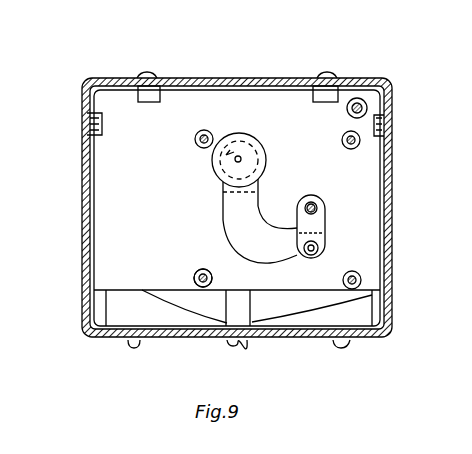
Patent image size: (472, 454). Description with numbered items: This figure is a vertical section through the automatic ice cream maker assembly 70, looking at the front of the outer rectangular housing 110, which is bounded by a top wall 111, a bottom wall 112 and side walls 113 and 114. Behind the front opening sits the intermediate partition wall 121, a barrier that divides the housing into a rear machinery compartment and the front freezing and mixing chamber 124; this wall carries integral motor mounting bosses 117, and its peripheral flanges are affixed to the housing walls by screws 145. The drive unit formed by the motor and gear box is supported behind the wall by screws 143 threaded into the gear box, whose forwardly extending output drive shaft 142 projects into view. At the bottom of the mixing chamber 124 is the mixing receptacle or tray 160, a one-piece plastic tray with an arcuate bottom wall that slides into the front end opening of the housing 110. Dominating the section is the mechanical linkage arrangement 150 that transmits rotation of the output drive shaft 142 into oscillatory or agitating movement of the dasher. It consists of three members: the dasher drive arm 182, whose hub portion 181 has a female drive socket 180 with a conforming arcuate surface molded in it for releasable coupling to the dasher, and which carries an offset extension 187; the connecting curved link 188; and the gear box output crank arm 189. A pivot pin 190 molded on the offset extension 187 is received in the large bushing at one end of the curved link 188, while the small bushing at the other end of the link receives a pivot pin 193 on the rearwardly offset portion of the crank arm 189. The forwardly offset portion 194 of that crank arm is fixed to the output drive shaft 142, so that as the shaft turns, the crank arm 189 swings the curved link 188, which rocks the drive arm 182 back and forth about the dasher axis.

The automatic ice cream maker assembly 70 is at (350, 70).
The outer rectangular housing 110 is at (270, 76).
The top wall 111 is at (188, 78).
The bottom wall 112 is at (185, 338).
The side wall 113 is at (391, 166).
The side wall 114 is at (82, 180).
The motor mounting bosses 117 is at (210, 130).
The intermediate partition wall 121 is at (388, 222).
The front freezing and mixing chamber 124 is at (120, 318).
The output drive shaft 142 is at (323, 196).
The screws 143 is at (194, 278).
The screws 145 is at (150, 77).
The mechanical linkage arrangement 150 is at (281, 190).
The mixing receptacle or tray 160 is at (298, 310).
The female drive socket 180 is at (214, 157).
The hub portion 181 is at (247, 136).
The dasher drive arm 182 is at (220, 188).
The offset extension 187 is at (226, 219).
The connecting curved link 188 is at (238, 246).
The gear box output crank arm 189 is at (326, 202).
The pivot pin 190 is at (222, 202).
The pivot pin 193 is at (326, 240).
The forwardly offset portion 194 is at (325, 256).